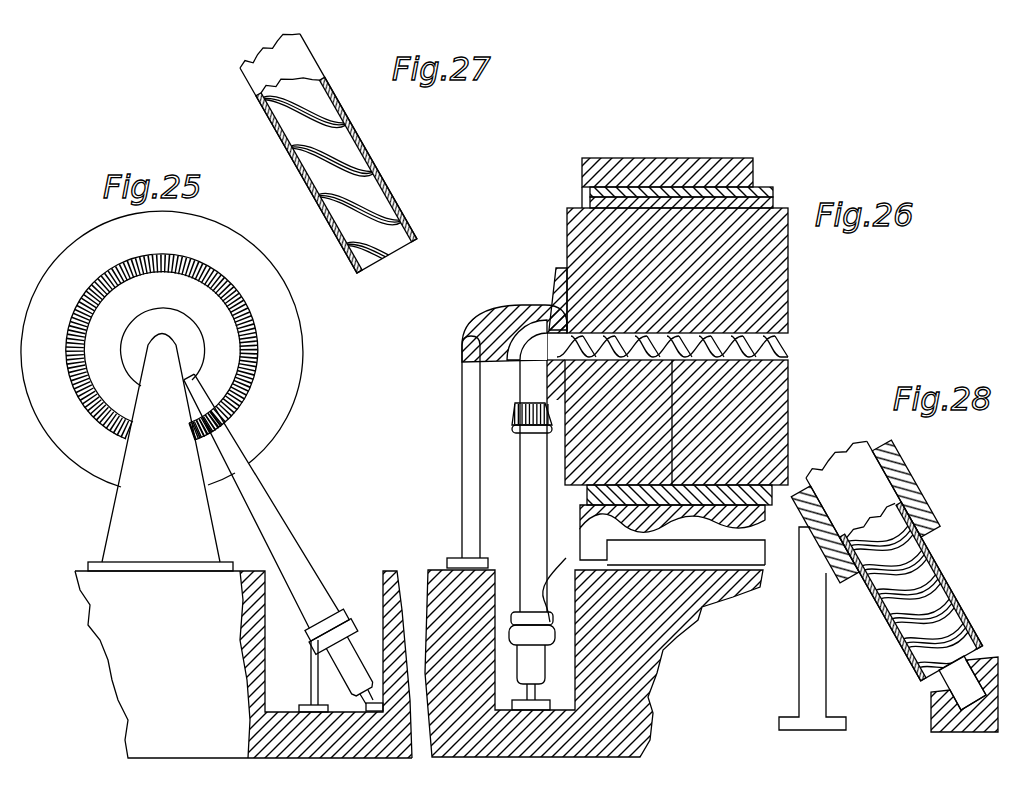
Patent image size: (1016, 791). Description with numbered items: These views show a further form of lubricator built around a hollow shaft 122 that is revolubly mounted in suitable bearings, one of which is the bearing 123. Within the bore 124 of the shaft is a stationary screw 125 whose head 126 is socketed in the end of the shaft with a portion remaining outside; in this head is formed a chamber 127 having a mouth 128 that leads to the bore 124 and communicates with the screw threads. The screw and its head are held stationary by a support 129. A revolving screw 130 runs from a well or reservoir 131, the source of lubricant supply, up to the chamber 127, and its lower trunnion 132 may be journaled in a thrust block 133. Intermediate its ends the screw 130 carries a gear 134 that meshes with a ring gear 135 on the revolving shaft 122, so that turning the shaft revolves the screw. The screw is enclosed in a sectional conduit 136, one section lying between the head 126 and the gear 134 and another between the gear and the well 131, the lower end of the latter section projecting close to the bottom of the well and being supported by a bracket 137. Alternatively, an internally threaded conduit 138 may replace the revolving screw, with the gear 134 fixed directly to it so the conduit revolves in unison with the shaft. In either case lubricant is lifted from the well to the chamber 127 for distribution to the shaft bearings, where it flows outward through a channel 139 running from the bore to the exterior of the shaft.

In FIG. 25, the hollow shaft 122 is at (290, 380).
In FIG. 26, the hollow shaft 122 is at (567, 237).
In FIG. 26, the bearing 123 is at (630, 154).
In FIG. 26, the bore 124 is at (790, 347).
In FIG. 26, the screw 125 is at (790, 373).
In FIG. 25, the head 126 is at (130, 344).
In FIG. 26, the head 126 is at (509, 306).
In FIG. 26, the chamber 127 is at (513, 352).
In FIG. 26, the mouth 128 is at (562, 306).
In FIG. 25, the support 129 is at (119, 510).
In FIG. 26, the support 129 is at (462, 493).
In FIG. 28, the revolving screw 130 is at (923, 583).
In FIG. 25, the well 131 is at (358, 576).
In FIG. 26, the well 131 is at (678, 650).
In FIG. 28, the well 131 is at (1009, 622).
In FIG. 25, the lower trunnion 132 is at (376, 686).
In FIG. 26, the lower trunnion 132 is at (540, 695).
In FIG. 28, the lower trunnion 132 is at (958, 689).
In FIG. 25, the thrust block 133 is at (366, 708).
In FIG. 26, the thrust block 133 is at (550, 703).
In FIG. 25, the gear 134 is at (232, 417).
In FIG. 26, the gear 134 is at (512, 420).
In FIG. 28, the gear 134 is at (865, 511).
In FIG. 25, the ring gear 135 is at (257, 345).
In FIG. 26, the ring gear 135 is at (518, 432).
In FIG. 25, the sectional conduit 136 is at (288, 536).
In FIG. 26, the sectional conduit 136 is at (518, 523).
In FIG. 28, the sectional conduit 136 is at (923, 545).
In FIG. 25, the bracket 137 is at (316, 663).
In FIG. 26, the bracket 137 is at (572, 580).
In FIG. 28, the bracket 137 is at (819, 645).
In FIG. 27, the internally threaded conduit 138 is at (388, 187).
In FIG. 26, the channel 139 is at (790, 412).